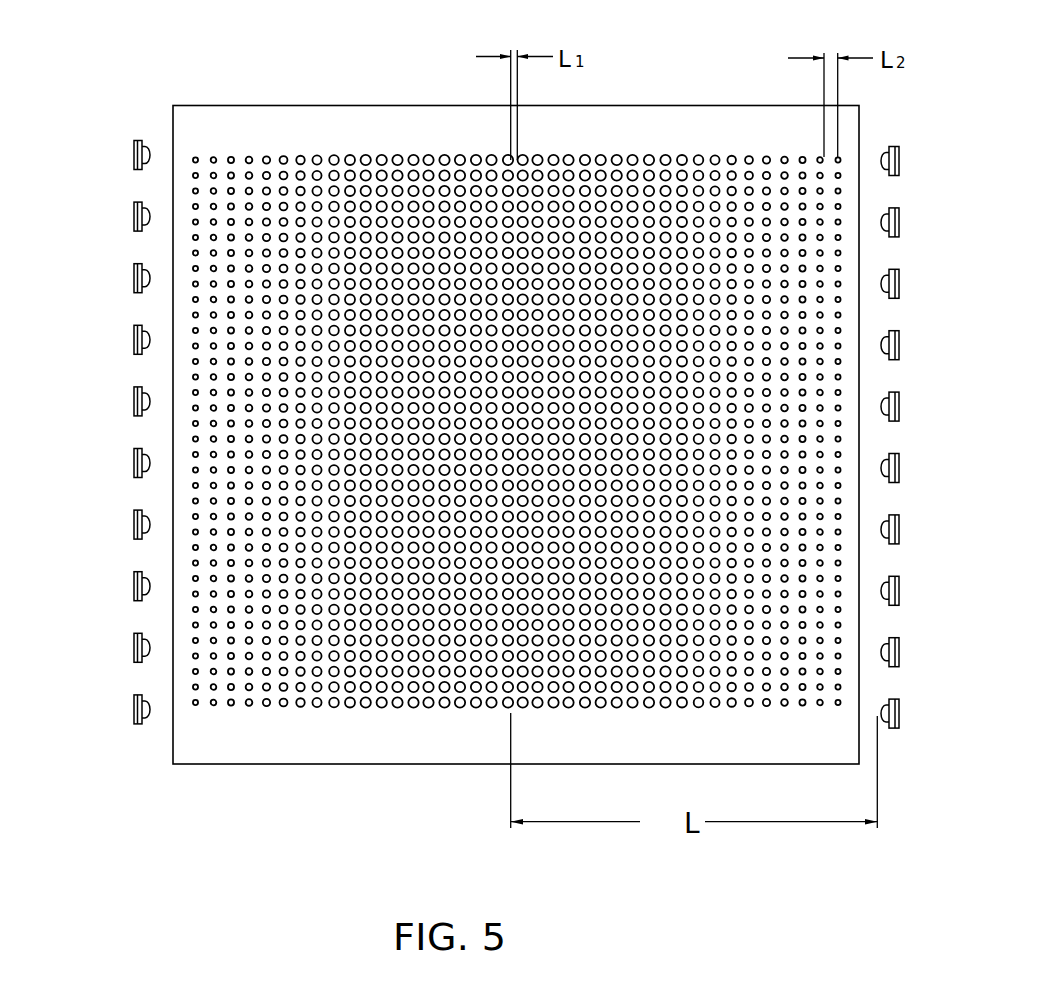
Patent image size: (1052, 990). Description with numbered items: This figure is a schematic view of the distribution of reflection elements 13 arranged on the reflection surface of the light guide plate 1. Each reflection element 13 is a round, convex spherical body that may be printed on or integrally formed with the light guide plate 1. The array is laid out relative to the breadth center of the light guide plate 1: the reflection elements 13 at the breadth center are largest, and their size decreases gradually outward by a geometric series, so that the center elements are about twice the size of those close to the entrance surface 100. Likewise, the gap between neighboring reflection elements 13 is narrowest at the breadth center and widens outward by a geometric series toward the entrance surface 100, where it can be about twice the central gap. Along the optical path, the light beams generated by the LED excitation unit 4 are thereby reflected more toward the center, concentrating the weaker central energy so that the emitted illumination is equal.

The light guide plate 1 is at (464, 393).
The LED excitation unit 4 is at (127, 213).
The reflection element 13 is at (192, 390).
The entrance surface 100 is at (468, 393).